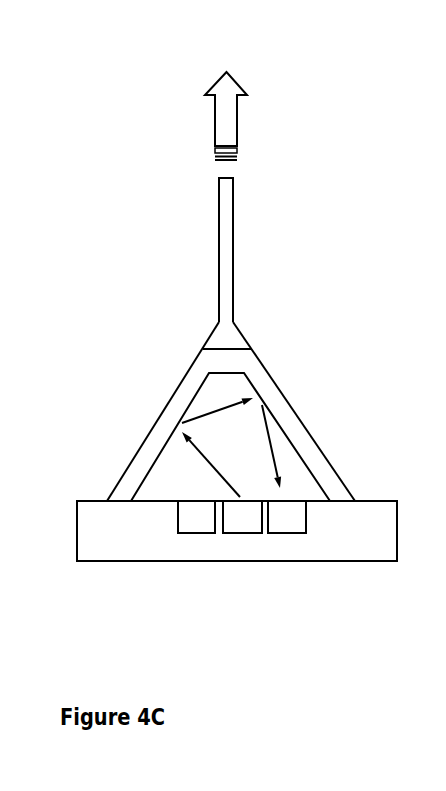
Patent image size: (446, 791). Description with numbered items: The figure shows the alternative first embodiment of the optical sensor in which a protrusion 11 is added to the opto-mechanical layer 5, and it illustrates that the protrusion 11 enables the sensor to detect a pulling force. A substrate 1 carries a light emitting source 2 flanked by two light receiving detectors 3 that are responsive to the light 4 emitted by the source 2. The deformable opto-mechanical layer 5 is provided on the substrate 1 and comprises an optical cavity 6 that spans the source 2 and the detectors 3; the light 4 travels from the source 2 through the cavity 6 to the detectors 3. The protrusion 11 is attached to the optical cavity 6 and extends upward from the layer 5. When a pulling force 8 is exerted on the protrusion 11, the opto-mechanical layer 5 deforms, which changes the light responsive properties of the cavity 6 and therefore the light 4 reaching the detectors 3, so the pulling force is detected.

The substrate 1 is at (332, 541).
The light emitting source 2 is at (239, 547).
The light receiving detector 3 is at (197, 547).
The light 4 is at (208, 397).
The opto-mechanical layer 5 is at (286, 407).
The optical cavity 6 is at (167, 472).
The force 8 is at (252, 123).
The protrusion 11 is at (258, 276).